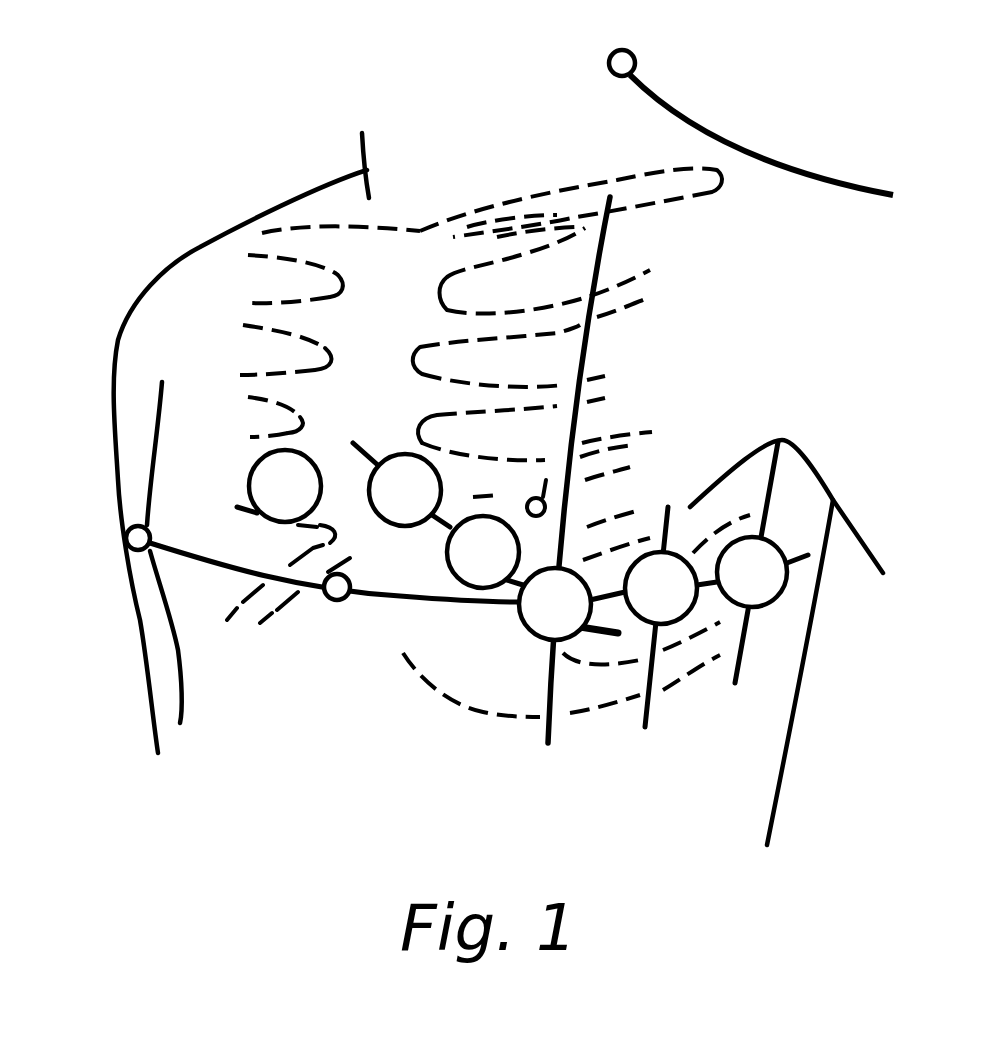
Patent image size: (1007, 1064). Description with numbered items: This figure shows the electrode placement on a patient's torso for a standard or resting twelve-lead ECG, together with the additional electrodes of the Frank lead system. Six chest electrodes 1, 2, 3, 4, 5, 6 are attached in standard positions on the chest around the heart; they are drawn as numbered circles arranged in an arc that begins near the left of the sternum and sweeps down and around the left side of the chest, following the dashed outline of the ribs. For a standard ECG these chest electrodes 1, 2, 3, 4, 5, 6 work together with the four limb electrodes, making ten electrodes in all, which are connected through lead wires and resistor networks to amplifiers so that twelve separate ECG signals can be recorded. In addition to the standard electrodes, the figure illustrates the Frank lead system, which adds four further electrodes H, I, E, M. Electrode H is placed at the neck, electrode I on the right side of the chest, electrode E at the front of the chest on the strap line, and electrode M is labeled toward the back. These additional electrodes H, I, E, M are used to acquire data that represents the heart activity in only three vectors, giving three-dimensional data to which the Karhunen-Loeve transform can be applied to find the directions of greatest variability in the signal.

The first precordial electrode 1 is at (285, 486).
The second precordial electrode 2 is at (405, 490).
The third precordial electrode 3 is at (483, 552).
The fourth precordial electrode 4 is at (555, 604).
The fifth precordial electrode 5 is at (661, 588).
The sixth precordial electrode 6 is at (752, 572).
The additional electrode H is at (751, 115).
The additional electrode I is at (110, 557).
The additional electrode E is at (330, 618).
The additional electrode M is at (650, 433).